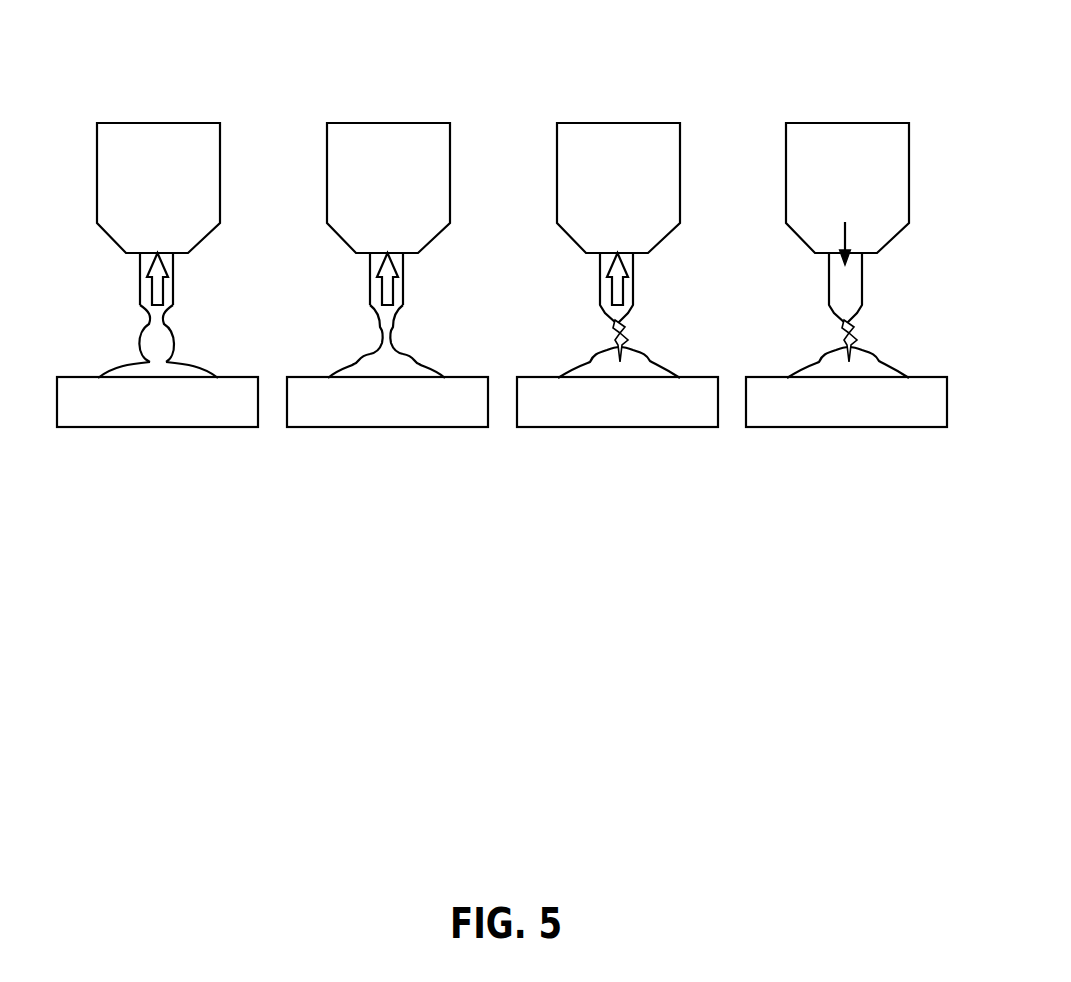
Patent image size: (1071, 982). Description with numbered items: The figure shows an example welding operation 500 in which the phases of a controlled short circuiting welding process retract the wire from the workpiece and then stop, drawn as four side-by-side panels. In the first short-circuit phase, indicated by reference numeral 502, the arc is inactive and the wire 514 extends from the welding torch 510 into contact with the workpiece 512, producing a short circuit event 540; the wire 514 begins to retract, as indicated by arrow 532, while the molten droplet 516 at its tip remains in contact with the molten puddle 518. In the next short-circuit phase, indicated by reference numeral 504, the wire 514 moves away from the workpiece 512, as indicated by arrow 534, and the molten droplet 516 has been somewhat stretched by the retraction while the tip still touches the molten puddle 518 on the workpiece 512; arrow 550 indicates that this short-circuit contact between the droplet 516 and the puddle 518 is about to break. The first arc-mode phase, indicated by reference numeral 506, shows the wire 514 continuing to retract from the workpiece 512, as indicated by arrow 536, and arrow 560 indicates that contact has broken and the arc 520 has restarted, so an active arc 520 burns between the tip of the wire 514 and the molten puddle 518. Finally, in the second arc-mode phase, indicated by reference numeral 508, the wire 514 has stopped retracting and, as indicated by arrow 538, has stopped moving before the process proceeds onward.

The welding operation 500 is at (517, 60).
The Phase 3-B (P3-B) 502 is at (160, 450).
The Phase 3-C (P3-C) 504 is at (387, 597).
The Phase 1-A (P1-A) 506 is at (617, 579).
The Phase 1-B (P1-B) 508 is at (846, 579).
The welding torch 510 is at (133, 123).
The workpiece 512 is at (119, 430).
The wire 514 is at (140, 298).
The molten droplet 516 is at (148, 323).
The molten puddle 518 is at (117, 365).
The arc 520 is at (698, 317).
The arrow 532 is at (169, 242).
The arrow 534 is at (403, 248).
The arrow 536 is at (633, 248).
The arrow 538 is at (843, 233).
The short circuit event 540 is at (196, 345).
The arrow 550 is at (438, 302).
The arrow 560 is at (670, 301).